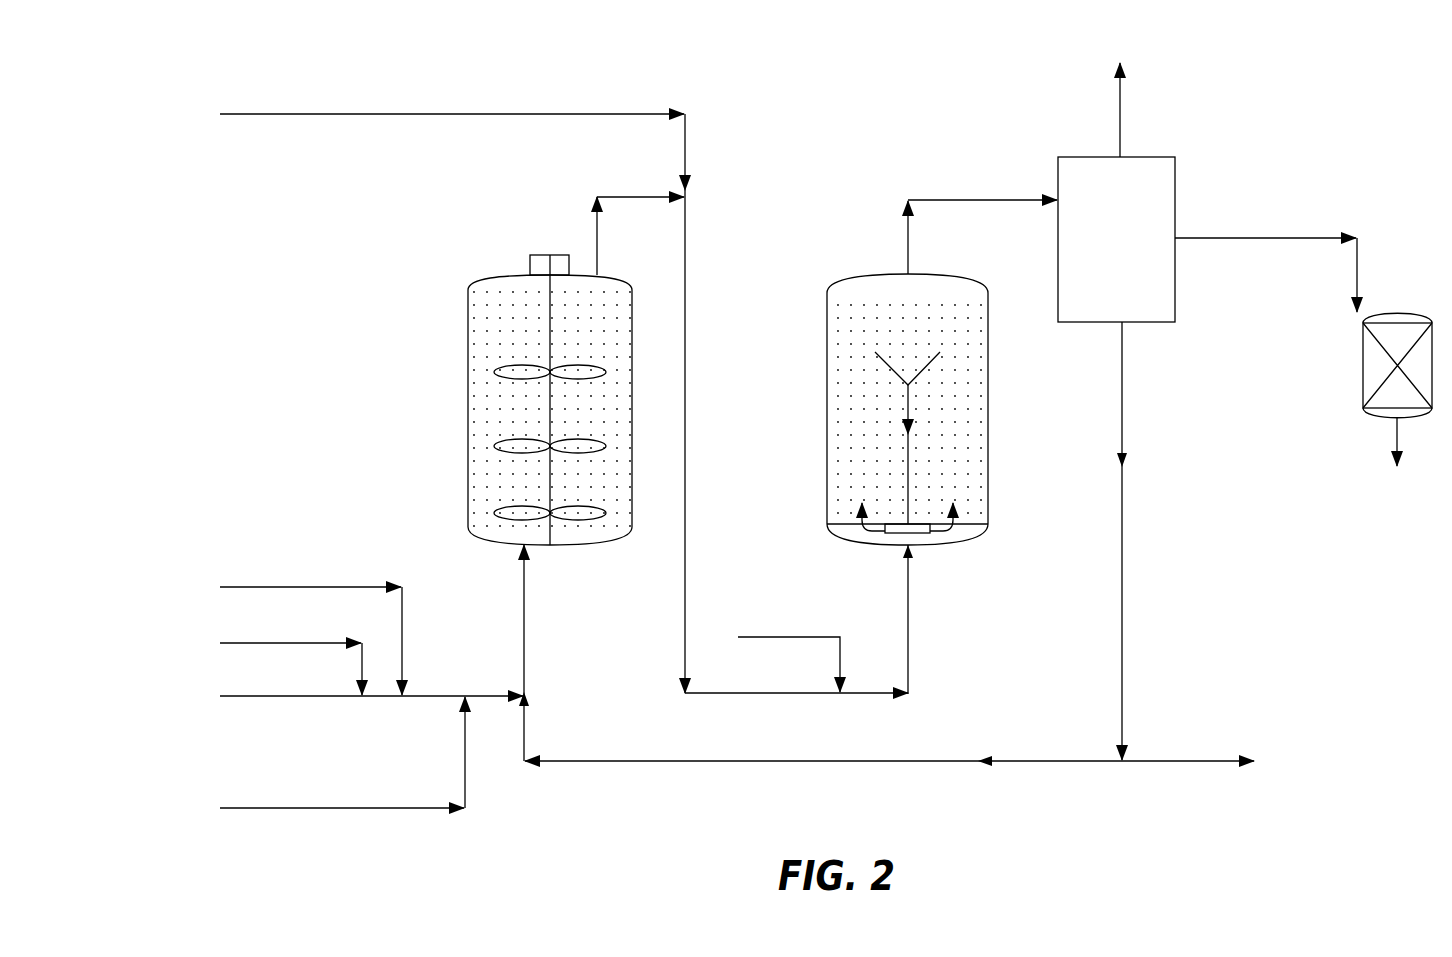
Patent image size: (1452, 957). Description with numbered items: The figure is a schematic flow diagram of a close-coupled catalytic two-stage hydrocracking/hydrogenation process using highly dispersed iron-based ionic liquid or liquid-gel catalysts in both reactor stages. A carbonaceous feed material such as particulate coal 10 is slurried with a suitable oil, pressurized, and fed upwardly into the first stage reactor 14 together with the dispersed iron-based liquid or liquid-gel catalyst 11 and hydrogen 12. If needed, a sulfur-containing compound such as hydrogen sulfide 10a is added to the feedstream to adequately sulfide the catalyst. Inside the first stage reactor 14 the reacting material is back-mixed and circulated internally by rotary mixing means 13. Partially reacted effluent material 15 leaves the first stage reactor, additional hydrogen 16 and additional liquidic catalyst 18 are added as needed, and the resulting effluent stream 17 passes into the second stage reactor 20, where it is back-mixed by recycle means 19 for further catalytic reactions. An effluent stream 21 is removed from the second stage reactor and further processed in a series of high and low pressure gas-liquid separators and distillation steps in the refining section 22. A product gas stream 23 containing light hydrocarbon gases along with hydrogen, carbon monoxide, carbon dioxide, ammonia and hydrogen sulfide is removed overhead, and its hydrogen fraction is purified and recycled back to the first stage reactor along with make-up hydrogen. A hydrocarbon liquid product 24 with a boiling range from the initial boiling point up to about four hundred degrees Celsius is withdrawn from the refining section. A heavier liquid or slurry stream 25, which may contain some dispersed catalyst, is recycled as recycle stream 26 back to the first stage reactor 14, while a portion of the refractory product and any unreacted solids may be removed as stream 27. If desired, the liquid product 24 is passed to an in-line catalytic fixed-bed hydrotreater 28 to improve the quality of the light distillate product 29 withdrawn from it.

The carbonaceous feed material 10 is at (318, 696).
The hydrogen sulfide addition 10a is at (318, 808).
The dispersed iron-based liquid or liquid-gel catalyst 11 is at (362, 655).
The hydrogen 12 is at (402, 635).
The rotary mixing means 13 is at (550, 470).
The first stage reactor 14 is at (468, 348).
The partially reacted effluent material 15 is at (620, 197).
The additional hydrogen 16 is at (685, 150).
The effluent stream 17 is at (687, 382).
The additional liquidic catalyst 18 is at (795, 637).
The recycle means 19 is at (908, 452).
The second stage reactor 20 is at (827, 322).
The effluent stream 21 is at (1003, 200).
The refining section 22 is at (1131, 250).
The product gas stream 23 is at (1120, 124).
The hydrocarbon liquid product 24 is at (1323, 240).
The heavier liquid or slurry stream 25 is at (1122, 595).
The recycle stream 26 is at (733, 761).
The refractory product stream 27 is at (1205, 761).
The in-line catalytic fixed-bed hydrotreater 28 is at (1363, 385).
The light distillate product 29 is at (1393, 432).